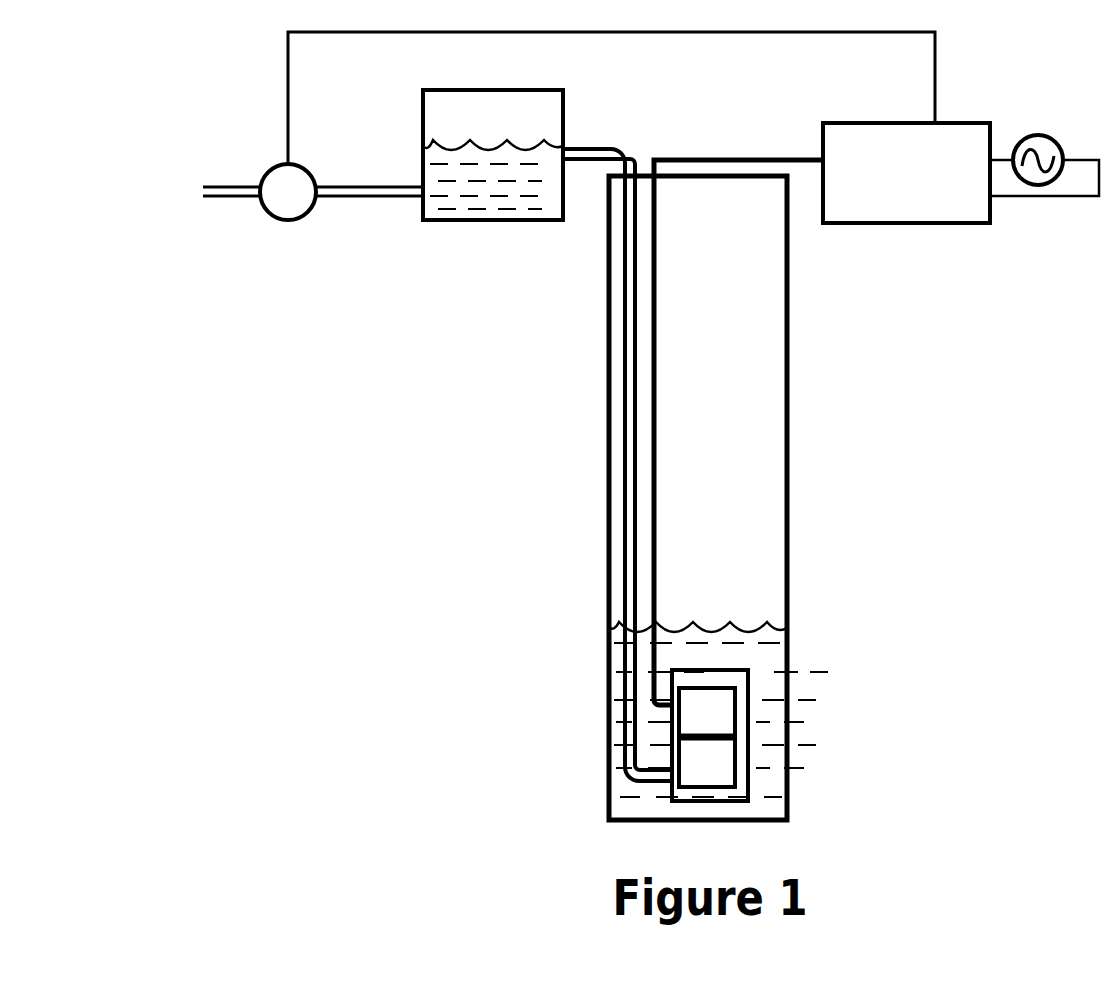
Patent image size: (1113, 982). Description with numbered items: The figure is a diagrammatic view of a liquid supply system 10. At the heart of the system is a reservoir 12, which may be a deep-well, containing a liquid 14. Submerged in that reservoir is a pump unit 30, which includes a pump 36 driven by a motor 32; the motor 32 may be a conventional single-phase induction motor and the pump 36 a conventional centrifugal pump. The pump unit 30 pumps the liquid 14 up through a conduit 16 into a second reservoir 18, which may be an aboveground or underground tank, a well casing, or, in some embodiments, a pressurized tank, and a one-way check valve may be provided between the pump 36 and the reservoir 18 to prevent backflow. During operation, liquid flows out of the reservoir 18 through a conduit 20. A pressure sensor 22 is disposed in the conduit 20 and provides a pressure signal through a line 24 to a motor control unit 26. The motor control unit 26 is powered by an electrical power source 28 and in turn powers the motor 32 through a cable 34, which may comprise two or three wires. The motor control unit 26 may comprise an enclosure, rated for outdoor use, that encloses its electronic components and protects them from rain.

The liquid supply system 10 is at (124, 60).
The reservoir 12 is at (609, 559).
The liquid 14 is at (745, 631).
The conduit 16 is at (623, 473).
The reservoir 18 is at (516, 221).
The conduit 20 is at (218, 193).
The pressure sensor 22 is at (290, 222).
The line 24 is at (288, 88).
The motor control unit 26 is at (940, 225).
The electrical power source 28 is at (1058, 142).
The pump unit 30 is at (755, 735).
The motor 32 is at (735, 699).
The cable 34 is at (656, 527).
The pump 36 is at (735, 767).